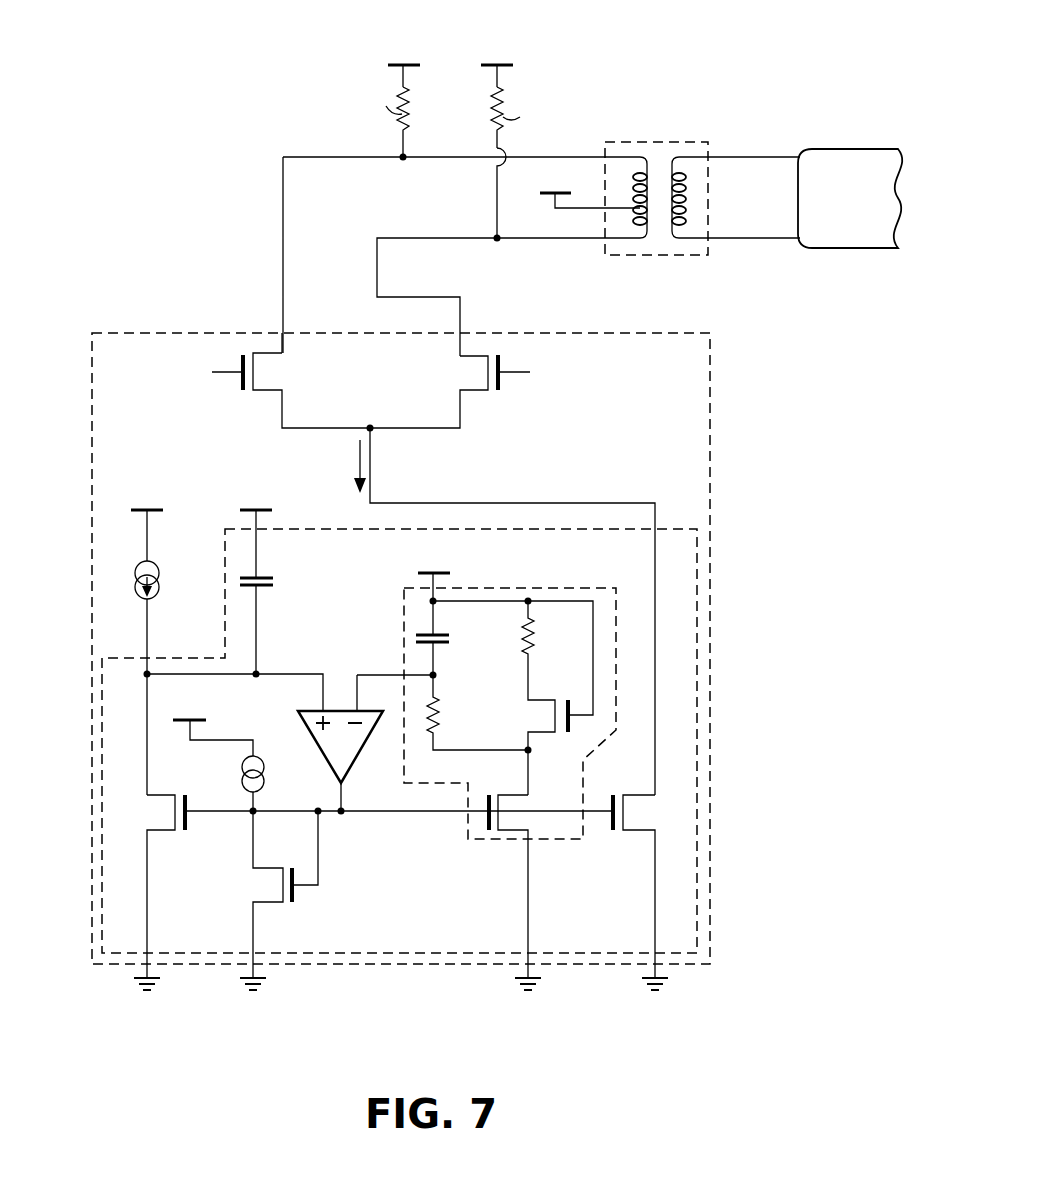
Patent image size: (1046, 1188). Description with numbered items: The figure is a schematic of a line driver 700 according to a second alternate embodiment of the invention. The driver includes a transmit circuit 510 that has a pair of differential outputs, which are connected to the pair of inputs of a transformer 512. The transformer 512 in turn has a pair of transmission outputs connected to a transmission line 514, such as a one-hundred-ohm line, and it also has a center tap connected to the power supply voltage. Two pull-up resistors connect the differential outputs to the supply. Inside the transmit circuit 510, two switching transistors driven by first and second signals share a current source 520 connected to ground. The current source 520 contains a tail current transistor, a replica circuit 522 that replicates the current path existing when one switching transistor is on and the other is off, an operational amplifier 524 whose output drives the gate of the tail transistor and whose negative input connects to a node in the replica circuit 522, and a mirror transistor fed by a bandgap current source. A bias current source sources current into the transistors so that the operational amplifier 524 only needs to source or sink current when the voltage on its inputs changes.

The line driver 700 is at (146, 140).
The transmit circuit 510 is at (522, 326).
The transformer 512 is at (624, 256).
The transmission line 514 is at (820, 250).
The current source 520 is at (676, 528).
The replica circuit 522 is at (404, 606).
The operational amplifier 524 is at (360, 745).